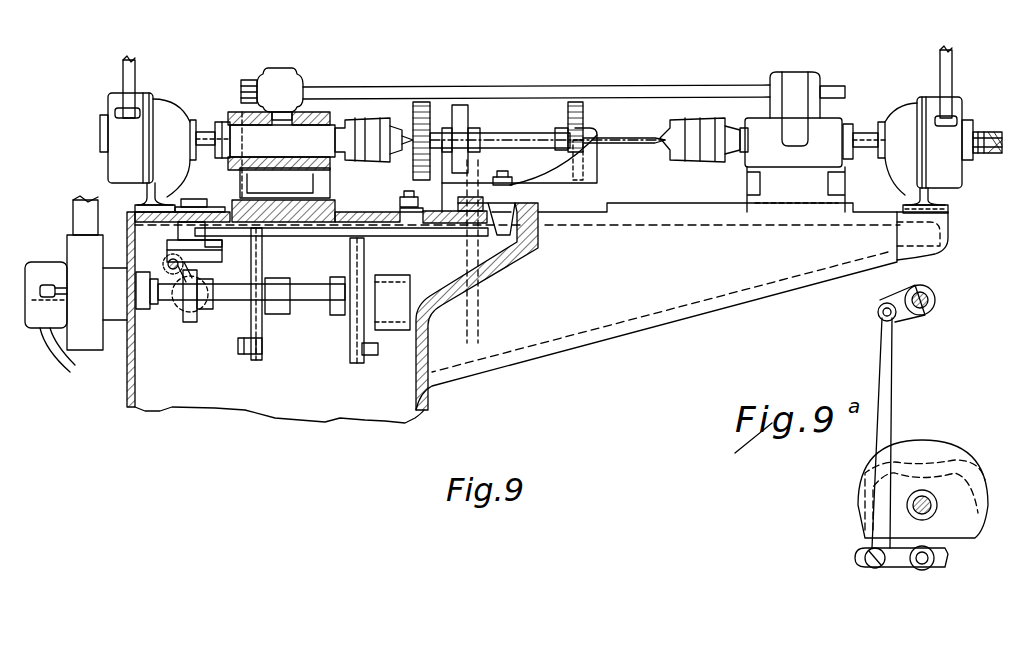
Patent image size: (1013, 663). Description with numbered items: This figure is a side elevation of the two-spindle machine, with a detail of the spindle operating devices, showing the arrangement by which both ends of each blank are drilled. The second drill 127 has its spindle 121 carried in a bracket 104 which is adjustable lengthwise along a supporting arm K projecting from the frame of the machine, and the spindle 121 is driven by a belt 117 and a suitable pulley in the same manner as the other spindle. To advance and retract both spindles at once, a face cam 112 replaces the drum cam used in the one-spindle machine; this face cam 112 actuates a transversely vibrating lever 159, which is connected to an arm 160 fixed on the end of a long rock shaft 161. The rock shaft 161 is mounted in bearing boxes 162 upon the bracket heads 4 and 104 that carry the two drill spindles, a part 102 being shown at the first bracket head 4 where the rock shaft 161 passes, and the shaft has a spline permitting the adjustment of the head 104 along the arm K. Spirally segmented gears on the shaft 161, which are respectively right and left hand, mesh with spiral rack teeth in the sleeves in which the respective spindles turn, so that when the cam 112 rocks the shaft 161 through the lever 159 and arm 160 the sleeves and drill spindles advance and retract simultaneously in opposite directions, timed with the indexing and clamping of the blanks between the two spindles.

In FIG. 9, the bracket head 4 is at (236, 116).
In FIG. 9, the bracket 102 is at (287, 76).
In FIG. 9, the rock shaft 161 is at (492, 96).
In FIG. 9, the second drill 127 is at (661, 126).
In FIG. 9, the bearing box 162 is at (808, 53).
In FIG. 9, the belt 117 is at (945, 70).
In FIG. 9, the bracket 104 is at (832, 125).
In FIG. 9, the spindle 121 is at (858, 120).
In FIG. 9, the face cam 112 is at (263, 263).
In FIG. 9A, the face cam 112 is at (857, 505).
In FIG. 9, the lever 159 is at (240, 328).
In FIG. 9A, the lever 159 is at (893, 397).
In FIG. 9A, the arm 160 is at (903, 311).
In FIG. 9, the supporting arm K is at (750, 296).